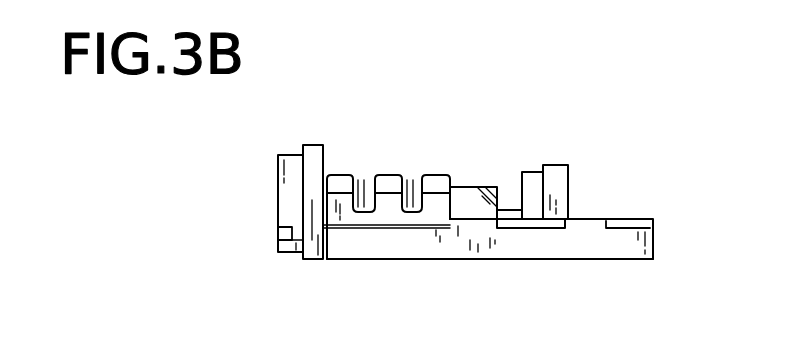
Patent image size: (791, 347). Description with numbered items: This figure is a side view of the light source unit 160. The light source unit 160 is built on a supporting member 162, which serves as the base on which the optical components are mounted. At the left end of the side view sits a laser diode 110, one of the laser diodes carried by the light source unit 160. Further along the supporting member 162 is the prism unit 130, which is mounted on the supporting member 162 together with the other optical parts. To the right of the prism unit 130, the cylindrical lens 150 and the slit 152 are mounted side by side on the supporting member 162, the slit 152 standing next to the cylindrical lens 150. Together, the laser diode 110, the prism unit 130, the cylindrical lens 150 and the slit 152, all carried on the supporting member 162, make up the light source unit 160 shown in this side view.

The laser diode 110 is at (278, 198).
The prism unit 130 is at (465, 197).
The cylindrical lens 150 is at (530, 175).
The slit 152 is at (560, 192).
The light source unit 160 is at (565, 106).
The supporting member 162 is at (486, 257).